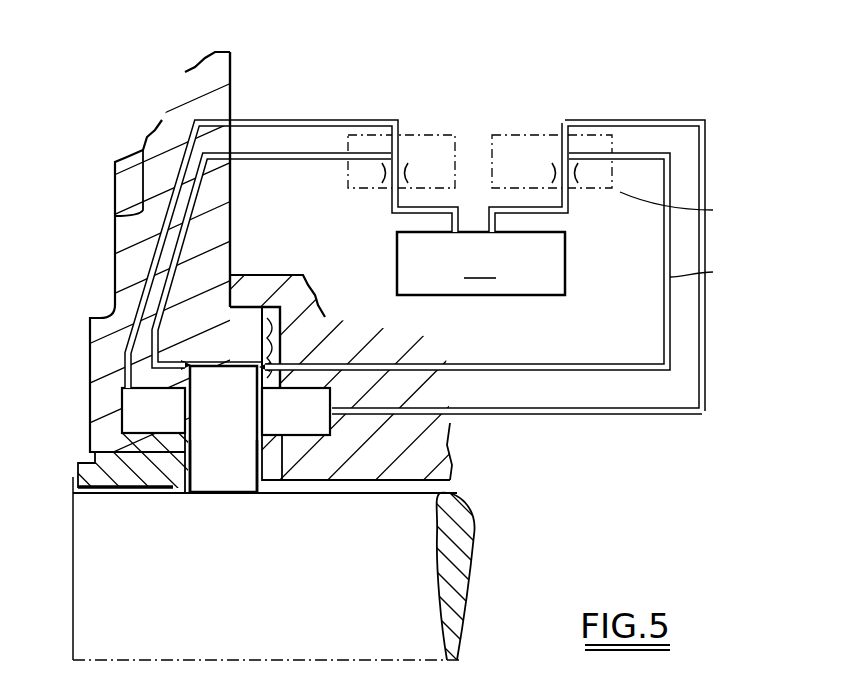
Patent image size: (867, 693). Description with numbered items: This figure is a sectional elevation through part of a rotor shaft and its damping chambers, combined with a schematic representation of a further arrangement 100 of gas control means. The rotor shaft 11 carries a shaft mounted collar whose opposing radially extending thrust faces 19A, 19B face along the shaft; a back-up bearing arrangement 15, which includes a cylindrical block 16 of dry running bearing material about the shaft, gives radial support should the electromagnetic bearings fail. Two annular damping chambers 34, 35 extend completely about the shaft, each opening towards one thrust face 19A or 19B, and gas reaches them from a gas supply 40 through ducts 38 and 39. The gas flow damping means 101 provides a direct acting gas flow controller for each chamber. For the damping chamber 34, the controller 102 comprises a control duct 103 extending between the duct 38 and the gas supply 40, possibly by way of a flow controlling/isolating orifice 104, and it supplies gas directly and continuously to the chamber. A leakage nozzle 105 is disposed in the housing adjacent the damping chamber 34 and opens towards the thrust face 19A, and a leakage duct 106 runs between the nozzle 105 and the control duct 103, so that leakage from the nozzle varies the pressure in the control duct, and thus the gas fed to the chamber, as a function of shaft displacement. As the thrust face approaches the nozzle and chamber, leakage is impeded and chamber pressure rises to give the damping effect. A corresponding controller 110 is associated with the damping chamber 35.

The rotor shaft 11 is at (428, 537).
The back-up bearing arrangement 15 is at (187, 495).
The cylindrical block 16 is at (98, 493).
The thrust face 19A is at (267, 495).
The thrust face 19B is at (192, 473).
The damping chamber 34 is at (322, 427).
The damping chamber 35 is at (157, 422).
The duct 38 is at (655, 417).
The duct 39 is at (145, 256).
The gas supply 40 is at (481, 263).
The further arrangement 100 is at (522, 472).
The gas flow damping means 101 is at (408, 100).
The controller 102 is at (620, 192).
The control duct 103 is at (568, 212).
The orifice 104 is at (578, 182).
The leakage nozzle 105 is at (278, 338).
The leakage duct 106 is at (670, 277).
The controller 110 is at (347, 188).